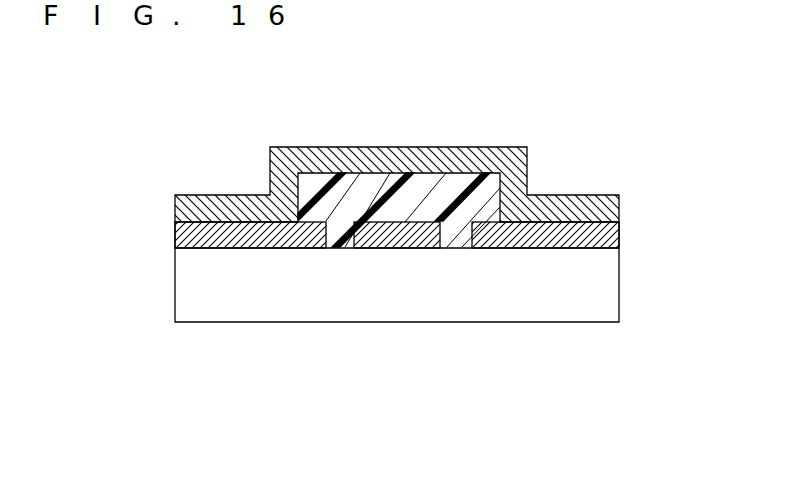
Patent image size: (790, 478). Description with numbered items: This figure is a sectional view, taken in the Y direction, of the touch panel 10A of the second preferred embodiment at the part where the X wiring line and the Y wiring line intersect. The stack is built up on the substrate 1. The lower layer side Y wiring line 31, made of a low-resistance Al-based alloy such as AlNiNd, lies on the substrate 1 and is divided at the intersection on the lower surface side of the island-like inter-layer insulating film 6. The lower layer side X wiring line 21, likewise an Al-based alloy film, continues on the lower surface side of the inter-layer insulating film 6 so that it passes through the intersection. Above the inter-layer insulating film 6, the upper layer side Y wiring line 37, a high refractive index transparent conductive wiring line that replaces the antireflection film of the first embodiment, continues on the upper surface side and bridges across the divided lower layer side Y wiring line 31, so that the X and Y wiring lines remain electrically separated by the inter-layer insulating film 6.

The touch panel 10A is at (622, 134).
The substrate 1 is at (605, 289).
The lower layer side Y wiring line 31 is at (622, 234).
The lower layer side X wiring line 21 is at (403, 237).
The upper layer side Y wiring line 37 is at (472, 162).
The inter-layer insulating film 6 is at (338, 202).